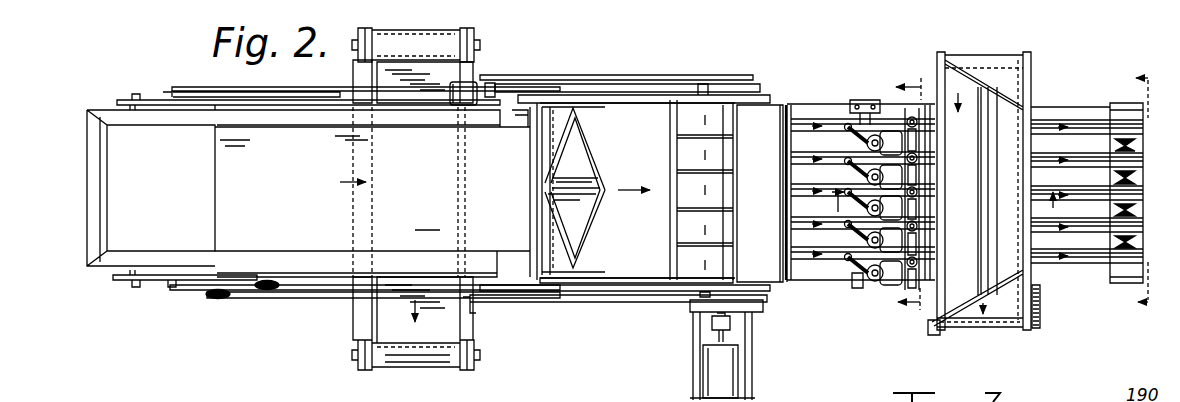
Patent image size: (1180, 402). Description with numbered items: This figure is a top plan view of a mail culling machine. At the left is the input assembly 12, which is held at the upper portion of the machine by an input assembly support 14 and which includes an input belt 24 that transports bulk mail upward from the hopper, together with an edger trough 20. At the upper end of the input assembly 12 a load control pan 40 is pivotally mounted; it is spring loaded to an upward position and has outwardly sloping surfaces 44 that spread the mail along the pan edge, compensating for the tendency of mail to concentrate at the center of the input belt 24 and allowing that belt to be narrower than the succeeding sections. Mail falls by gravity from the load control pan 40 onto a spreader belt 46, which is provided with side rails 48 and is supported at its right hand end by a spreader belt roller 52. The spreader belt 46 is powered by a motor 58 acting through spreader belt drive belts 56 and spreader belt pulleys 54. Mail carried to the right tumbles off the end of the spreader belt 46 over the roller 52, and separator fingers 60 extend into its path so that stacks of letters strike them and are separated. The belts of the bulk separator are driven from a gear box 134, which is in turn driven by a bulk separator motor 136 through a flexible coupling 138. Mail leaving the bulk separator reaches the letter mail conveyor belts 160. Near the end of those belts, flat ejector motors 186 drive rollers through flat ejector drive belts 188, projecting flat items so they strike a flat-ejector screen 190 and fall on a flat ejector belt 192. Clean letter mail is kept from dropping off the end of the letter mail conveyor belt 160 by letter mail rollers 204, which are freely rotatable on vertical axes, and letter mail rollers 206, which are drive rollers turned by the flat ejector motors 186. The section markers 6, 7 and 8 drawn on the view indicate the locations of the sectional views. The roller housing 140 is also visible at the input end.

The input assembly 12 is at (204, 82).
The input belt 24 is at (316, 238).
The conveyor roller 140 is at (408, 38).
The motor 58 is at (466, 88).
The spreader belt drive belts 56 is at (513, 76).
The spreader belt pulleys 54 is at (568, 88).
The spreader belt roller 52 is at (597, 100).
The spreader belt 46 is at (622, 112).
The separator fingers 60 is at (696, 170).
The outwardly sloping surfaces 44 is at (580, 148).
The load control pan 40 is at (586, 222).
The side rails 48 is at (718, 97).
The input assembly support 14 is at (680, 288).
The gear box 134 is at (750, 300).
The flexible coupling 138 is at (733, 328).
The bulk separator motor 136 is at (735, 372).
The edger trough 20 is at (770, 126).
The letter mail conveyor belts 160 is at (822, 275).
The flat ejector drive belts 188 is at (862, 104).
The letter mail rollers 206 is at (912, 120).
The letter mail rollers 204 is at (918, 163).
The flat ejector motors 186 is at (905, 278).
The section line 7 is at (938, 204).
The section line 6 is at (915, 200).
The section line 8 is at (1149, 191).
The flat ejector belt 192 is at (1000, 312).
The flat-ejector screen 190 is at (1036, 292).